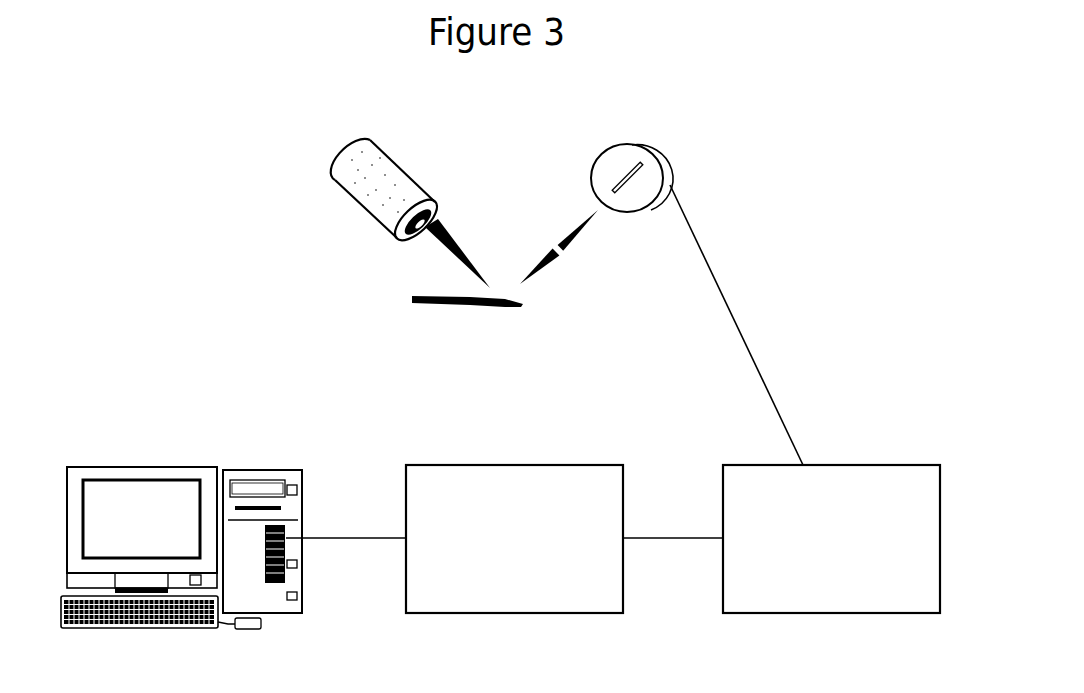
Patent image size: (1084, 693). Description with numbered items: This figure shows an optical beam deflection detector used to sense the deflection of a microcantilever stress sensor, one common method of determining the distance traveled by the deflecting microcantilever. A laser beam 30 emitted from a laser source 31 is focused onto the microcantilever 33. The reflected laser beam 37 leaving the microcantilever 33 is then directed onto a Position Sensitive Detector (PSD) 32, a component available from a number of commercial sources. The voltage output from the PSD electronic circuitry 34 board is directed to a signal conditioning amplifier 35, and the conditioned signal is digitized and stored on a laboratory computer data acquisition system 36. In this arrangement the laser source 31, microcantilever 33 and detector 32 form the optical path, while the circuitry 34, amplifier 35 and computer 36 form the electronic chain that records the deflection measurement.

The laser beam 30 is at (441, 253).
The laser source 31 is at (373, 187).
The position sensitive detector 32 is at (610, 172).
The microcantilever 33 is at (438, 304).
The PSD electronic circuitry board 34 is at (831, 539).
The signal conditioning amplifier 35 is at (514, 539).
The laboratory computer data acquisition system 36 is at (181, 528).
The reflected laser beam 37 is at (561, 249).